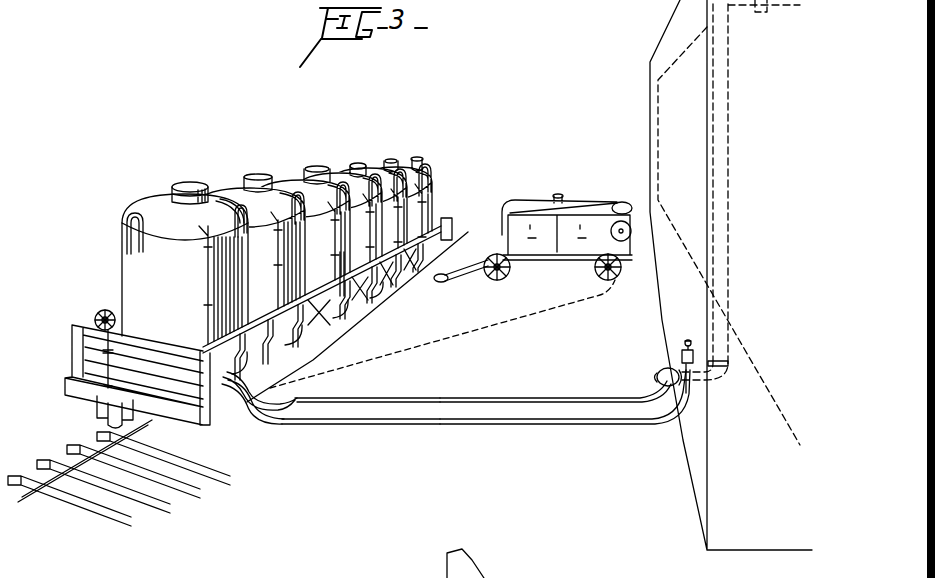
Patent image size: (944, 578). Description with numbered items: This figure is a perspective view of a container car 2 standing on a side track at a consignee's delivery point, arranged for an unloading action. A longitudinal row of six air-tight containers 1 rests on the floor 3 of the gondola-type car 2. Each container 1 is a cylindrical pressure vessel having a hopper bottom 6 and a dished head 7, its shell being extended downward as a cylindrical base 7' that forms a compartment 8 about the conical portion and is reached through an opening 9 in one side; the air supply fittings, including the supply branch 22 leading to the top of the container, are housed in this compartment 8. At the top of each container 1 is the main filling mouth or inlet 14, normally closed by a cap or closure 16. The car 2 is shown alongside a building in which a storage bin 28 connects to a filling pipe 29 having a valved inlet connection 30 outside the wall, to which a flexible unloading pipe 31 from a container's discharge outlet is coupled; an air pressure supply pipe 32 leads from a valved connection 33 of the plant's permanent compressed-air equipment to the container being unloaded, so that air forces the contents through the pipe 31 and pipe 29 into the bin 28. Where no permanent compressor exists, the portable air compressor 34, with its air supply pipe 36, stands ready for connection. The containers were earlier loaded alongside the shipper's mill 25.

The container 1 is at (133, 267).
The container car 2 is at (78, 350).
The floor 3 is at (156, 437).
The hopper bottom 6 is at (352, 316).
The dished head 7 is at (185, 215).
The cylindrical base 7' is at (329, 312).
The compartment 8 is at (293, 325).
The opening 9 is at (339, 262).
The main control filling mouth or inlet 14 is at (190, 193).
The cap or closure 16 is at (186, 184).
The supply branch 22 is at (205, 281).
The shipper's mill 25 is at (688, 16).
The storage bin 28 is at (729, 236).
The filling pipe 29 is at (722, 248).
The valved inlet connection 30 is at (660, 374).
The flexible unloading pipe or tube 31 is at (565, 393).
The air pressure supply pipe 32 is at (437, 416).
The valved connection 33 is at (682, 351).
The portable air compressor 34 is at (587, 207).
The air supply pipe 36 is at (465, 330).